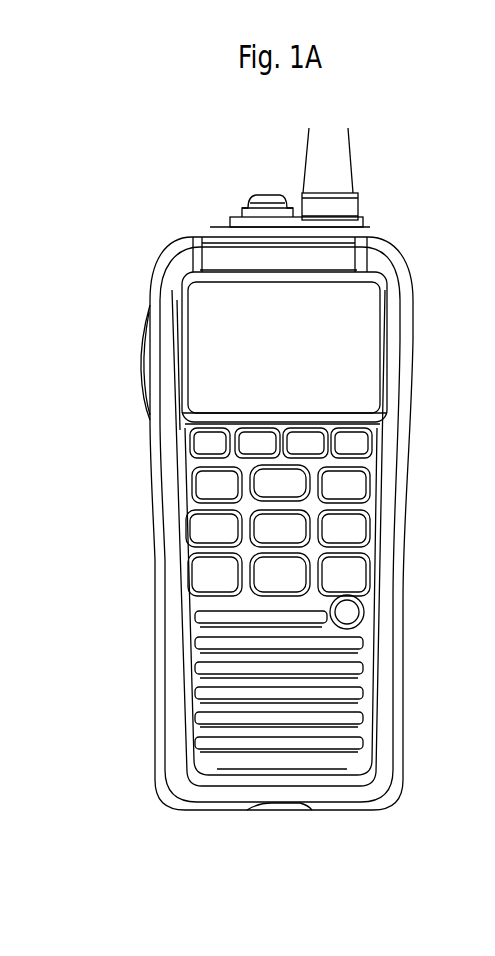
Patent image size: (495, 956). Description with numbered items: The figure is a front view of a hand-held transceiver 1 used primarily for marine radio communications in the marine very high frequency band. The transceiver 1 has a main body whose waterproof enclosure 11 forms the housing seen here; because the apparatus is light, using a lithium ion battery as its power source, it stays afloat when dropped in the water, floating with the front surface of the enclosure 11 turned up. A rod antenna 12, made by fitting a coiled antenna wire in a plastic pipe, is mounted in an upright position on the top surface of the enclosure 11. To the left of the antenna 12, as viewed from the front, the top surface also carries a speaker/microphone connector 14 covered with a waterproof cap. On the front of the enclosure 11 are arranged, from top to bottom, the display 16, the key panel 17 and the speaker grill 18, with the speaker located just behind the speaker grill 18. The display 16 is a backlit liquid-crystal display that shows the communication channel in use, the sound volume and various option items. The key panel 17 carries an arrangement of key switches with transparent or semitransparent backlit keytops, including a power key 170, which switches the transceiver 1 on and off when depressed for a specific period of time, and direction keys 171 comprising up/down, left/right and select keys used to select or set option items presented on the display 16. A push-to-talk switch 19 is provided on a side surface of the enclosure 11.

The transceiver 1 is at (410, 217).
The enclosure 11 is at (406, 278).
The rod antenna 12 is at (357, 176).
The speaker/microphone connector 14 is at (252, 196).
The display 16 is at (374, 368).
The key panel 17 is at (380, 455).
The direction keys 171 is at (375, 520).
The power key 170 is at (362, 604).
The speaker grill 18 is at (358, 690).
The push-to-talk switch 19 is at (140, 357).